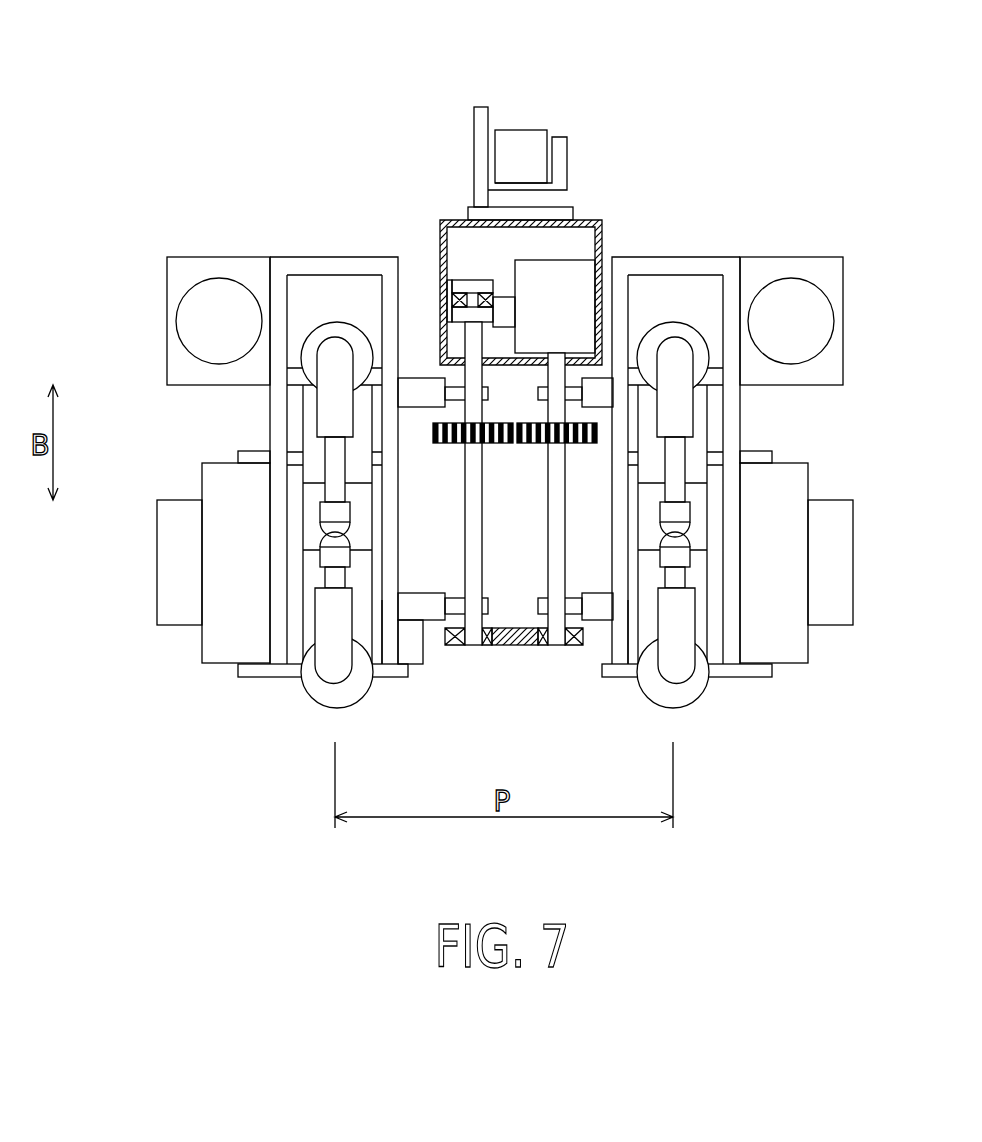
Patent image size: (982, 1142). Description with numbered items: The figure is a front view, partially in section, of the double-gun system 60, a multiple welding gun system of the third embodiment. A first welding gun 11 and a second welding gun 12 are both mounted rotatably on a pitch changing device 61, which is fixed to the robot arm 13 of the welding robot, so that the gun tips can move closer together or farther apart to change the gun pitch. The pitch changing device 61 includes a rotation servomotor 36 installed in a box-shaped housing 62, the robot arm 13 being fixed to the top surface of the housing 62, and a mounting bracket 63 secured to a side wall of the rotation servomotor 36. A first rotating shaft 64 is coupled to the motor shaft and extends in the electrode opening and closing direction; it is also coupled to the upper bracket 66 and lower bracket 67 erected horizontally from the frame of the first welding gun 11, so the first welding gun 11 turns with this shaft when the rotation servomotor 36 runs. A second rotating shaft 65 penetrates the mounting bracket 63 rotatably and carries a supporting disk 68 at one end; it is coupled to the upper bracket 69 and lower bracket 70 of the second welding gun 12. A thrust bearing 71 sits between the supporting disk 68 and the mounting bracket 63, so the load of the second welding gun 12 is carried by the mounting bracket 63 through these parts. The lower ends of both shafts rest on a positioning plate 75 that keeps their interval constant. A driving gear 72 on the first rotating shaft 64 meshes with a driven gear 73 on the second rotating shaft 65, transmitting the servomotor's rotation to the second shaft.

The double-gun system 60 is at (302, 38).
The pitch changing device 61 is at (443, 155).
The first welding gun 11 is at (788, 201).
The second welding gun 12 is at (205, 223).
The robot arm 13 is at (567, 142).
The rotation servomotor 36 is at (592, 257).
The housing 62 is at (594, 222).
The mounting bracket 63 is at (500, 297).
The first rotating shaft 64 is at (548, 528).
The second rotating shaft 65 is at (482, 565).
The upper bracket 66 is at (538, 393).
The lower bracket 67 is at (600, 620).
The supporting disk 68 is at (467, 280).
The upper bracket 69 is at (419, 378).
The lower bracket 70 is at (447, 645).
The thrust bearing 71 is at (447, 285).
The driving gear 72 is at (530, 443).
The driven gear 73 is at (493, 443).
The positioning plate 75 is at (512, 645).